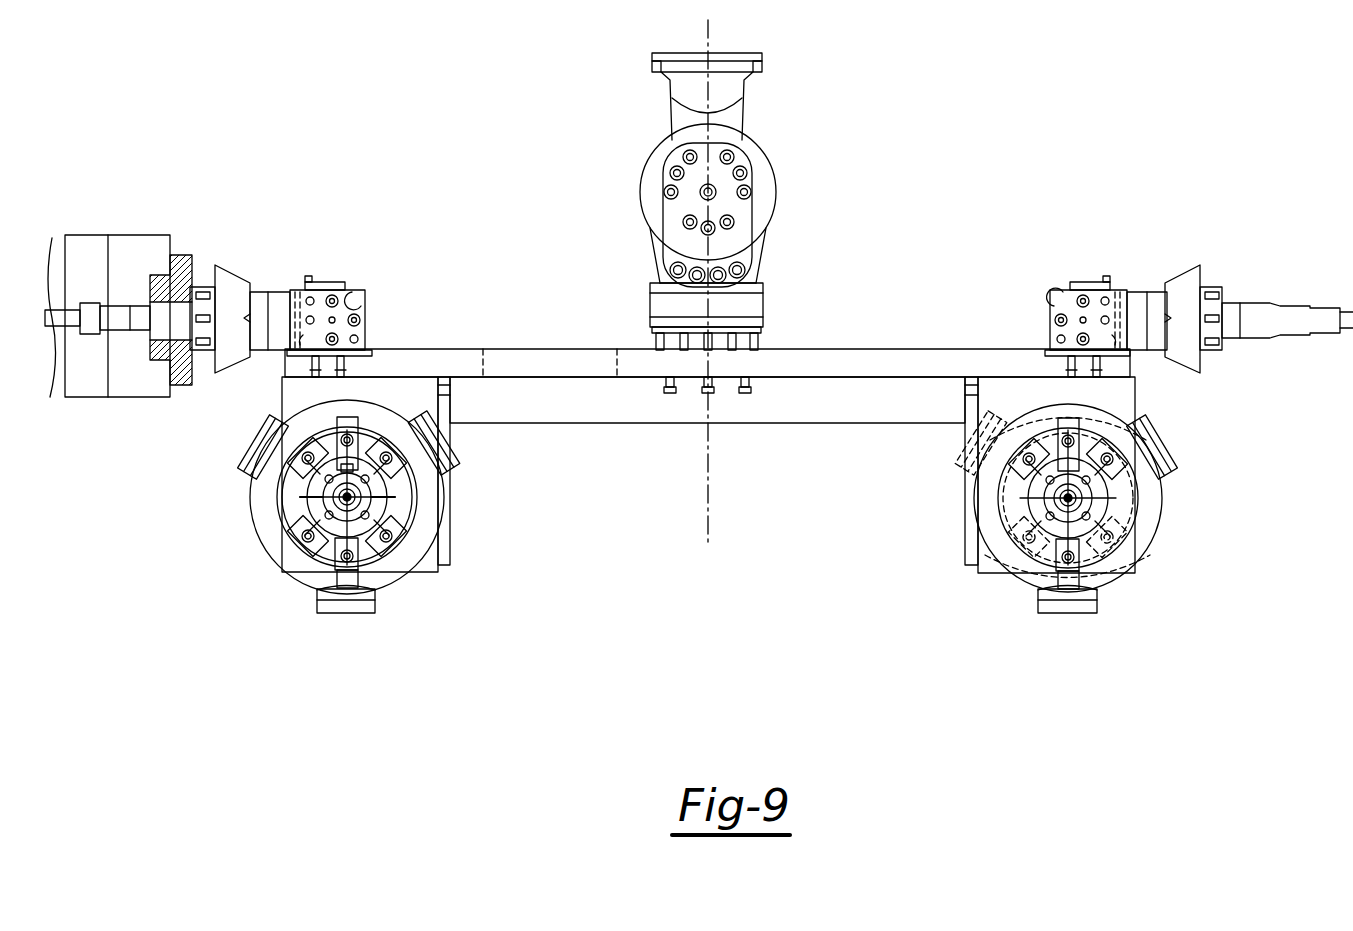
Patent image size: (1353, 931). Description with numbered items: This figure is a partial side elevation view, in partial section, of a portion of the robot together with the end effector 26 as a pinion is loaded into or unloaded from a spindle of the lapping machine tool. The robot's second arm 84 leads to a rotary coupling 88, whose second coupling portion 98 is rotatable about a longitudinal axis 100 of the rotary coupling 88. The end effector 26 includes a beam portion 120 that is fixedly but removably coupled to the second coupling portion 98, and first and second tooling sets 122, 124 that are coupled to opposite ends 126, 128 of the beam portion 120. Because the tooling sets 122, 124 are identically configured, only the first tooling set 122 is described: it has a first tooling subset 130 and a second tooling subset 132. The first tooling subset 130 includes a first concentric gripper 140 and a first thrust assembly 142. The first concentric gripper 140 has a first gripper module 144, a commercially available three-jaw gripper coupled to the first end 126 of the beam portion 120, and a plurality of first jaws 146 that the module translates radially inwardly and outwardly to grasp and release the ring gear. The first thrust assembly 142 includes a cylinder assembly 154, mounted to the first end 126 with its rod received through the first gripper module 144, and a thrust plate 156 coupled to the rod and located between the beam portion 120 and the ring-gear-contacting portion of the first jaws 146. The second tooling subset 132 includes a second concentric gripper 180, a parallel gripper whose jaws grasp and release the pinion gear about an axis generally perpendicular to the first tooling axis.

The end effector 26 is at (962, 146).
The second arm 84 is at (785, 148).
The rotary coupling 88 is at (770, 303).
The second coupling portion 98 is at (772, 328).
The longitudinal axis 100 is at (708, 522).
The beam portion 120 is at (548, 353).
The first tooling set 122 is at (1271, 410).
The second tooling set 124 is at (152, 412).
The first end 126 is at (975, 350).
The second end 128 is at (456, 353).
The first tooling subset 130 is at (250, 507).
The second tooling subset 132 is at (282, 370).
The first concentric gripper 140 is at (1026, 566).
The first thrust assembly 142 is at (1148, 540).
The first gripper module 144 is at (374, 446).
The first jaws 146 is at (252, 468).
The cylinder assembly 154 is at (424, 498).
The thrust plate 156 is at (438, 540).
The second concentric gripper 180 is at (368, 288).